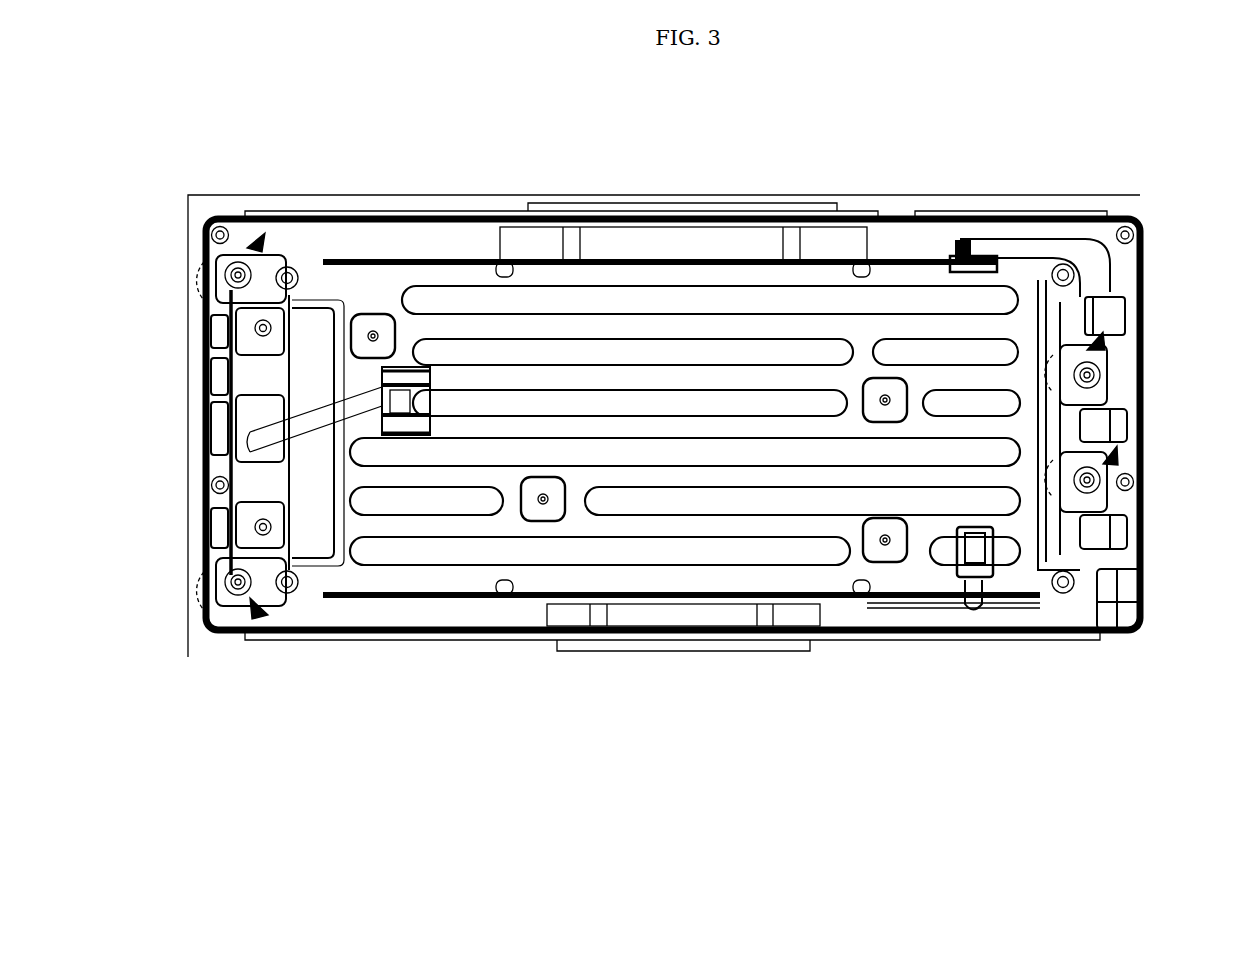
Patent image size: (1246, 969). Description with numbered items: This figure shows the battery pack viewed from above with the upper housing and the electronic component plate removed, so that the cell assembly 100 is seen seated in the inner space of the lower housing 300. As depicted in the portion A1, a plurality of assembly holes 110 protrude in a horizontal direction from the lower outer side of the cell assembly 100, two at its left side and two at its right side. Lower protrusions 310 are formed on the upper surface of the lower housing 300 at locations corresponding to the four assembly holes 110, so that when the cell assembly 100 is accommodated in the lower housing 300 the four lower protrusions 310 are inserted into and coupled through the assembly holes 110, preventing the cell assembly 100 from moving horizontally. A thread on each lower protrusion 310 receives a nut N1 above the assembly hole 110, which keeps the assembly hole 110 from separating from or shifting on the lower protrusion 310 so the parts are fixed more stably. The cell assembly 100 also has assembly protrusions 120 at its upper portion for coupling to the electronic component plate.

The cell assembly 100 is at (623, 300).
The assembly hole 110 is at (258, 232).
The assembly protrusion 120 is at (373, 333).
The lower housing 300 is at (851, 200).
The lower protrusion 310 is at (228, 268).
The nut N1 is at (230, 285).
The portion A1 is at (235, 225).